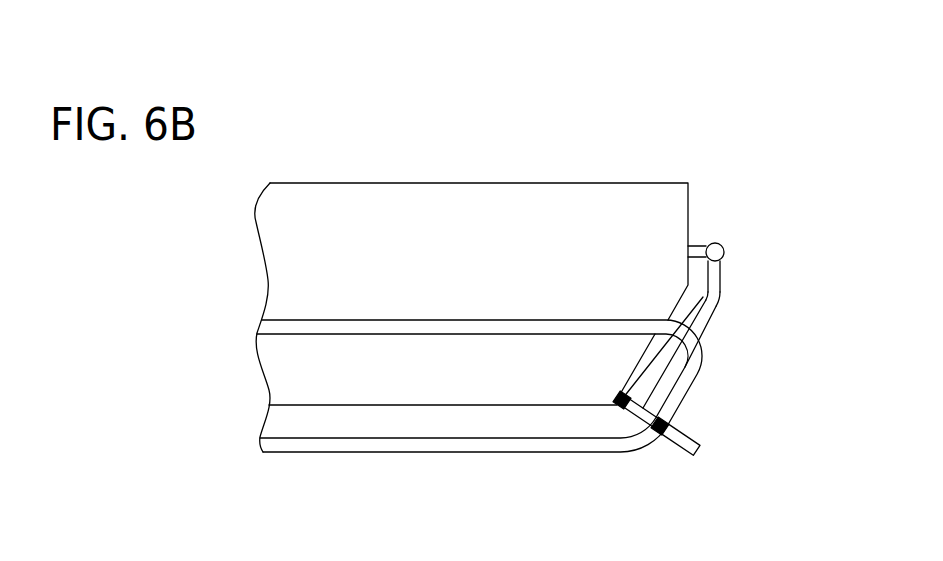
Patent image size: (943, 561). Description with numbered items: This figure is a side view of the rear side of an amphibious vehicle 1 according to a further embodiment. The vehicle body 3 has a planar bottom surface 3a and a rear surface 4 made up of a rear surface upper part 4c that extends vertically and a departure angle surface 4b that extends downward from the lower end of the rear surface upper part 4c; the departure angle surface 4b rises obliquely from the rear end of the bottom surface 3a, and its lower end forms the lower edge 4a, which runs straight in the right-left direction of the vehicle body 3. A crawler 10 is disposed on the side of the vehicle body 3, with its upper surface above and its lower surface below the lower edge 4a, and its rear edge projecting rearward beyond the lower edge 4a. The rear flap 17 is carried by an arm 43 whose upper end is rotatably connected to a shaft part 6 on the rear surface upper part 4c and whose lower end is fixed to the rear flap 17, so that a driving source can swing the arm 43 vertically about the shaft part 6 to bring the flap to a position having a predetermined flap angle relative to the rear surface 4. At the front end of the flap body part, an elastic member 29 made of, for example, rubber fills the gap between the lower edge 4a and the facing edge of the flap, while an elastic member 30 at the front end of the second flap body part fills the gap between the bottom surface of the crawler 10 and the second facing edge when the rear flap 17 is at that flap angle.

The amphibious vehicle 1 is at (628, 155).
The vehicle body 3 is at (398, 202).
The bottom surface 3a is at (345, 405).
The crawler 10 is at (413, 446).
The rear surface 4 is at (712, 201).
The lower edge 4a is at (617, 405).
The departure angle surface 4b is at (720, 290).
The rear surface upper part 4c is at (690, 235).
The arm 43 is at (723, 303).
The shaft part 6 is at (724, 250).
The elastic member 29 is at (615, 395).
The elastic member 30 is at (660, 436).
The rear flap 17 is at (682, 452).